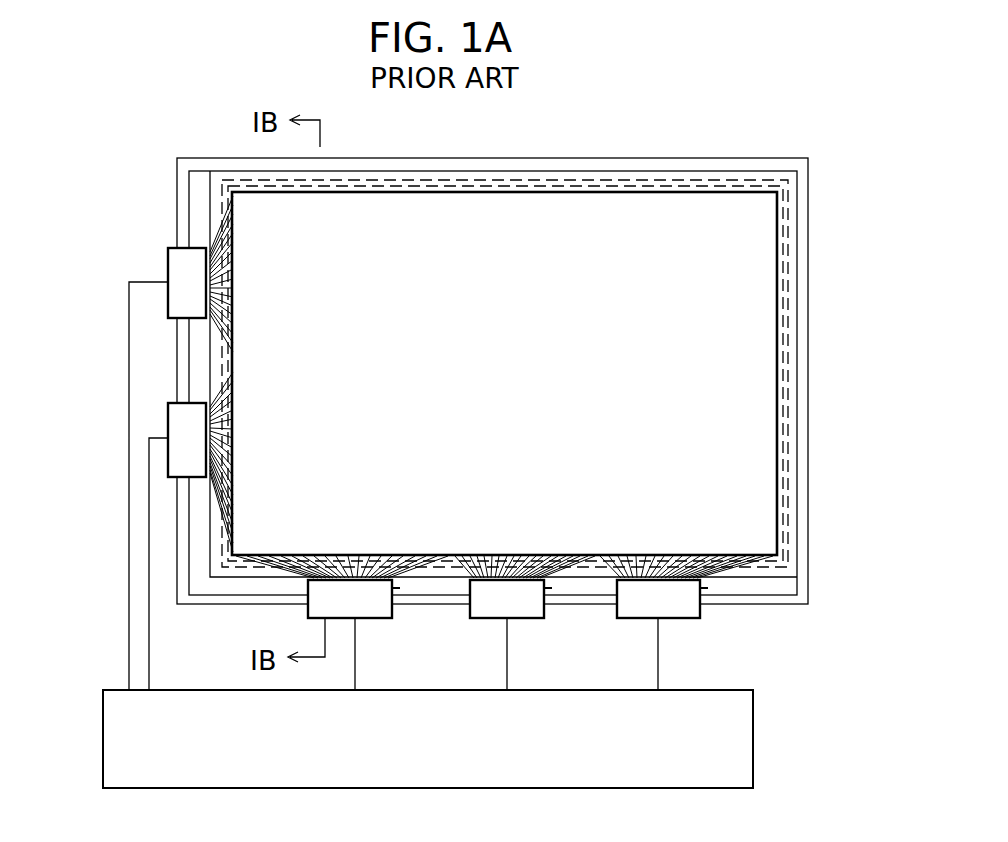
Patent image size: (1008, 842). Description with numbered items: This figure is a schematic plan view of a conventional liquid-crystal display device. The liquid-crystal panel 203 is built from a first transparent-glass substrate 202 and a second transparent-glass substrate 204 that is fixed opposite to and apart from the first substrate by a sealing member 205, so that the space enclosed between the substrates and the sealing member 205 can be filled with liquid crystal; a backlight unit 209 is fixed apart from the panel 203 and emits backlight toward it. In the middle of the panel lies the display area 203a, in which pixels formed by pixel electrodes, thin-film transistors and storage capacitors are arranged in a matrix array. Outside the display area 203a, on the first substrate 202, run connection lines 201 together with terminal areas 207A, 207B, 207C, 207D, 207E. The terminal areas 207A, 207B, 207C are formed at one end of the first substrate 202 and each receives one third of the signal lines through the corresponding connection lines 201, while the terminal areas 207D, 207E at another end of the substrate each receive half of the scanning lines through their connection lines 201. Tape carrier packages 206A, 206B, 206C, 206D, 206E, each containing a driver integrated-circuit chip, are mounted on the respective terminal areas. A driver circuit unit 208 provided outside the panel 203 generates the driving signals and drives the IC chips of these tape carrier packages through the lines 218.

The connection lines 201 is at (233, 278).
The first transparent-glass substrate 202 is at (790, 587).
The liquid-crystal panel 203 is at (635, 169).
The display area 203a is at (545, 327).
The second transparent-glass substrate 204 is at (793, 237).
The sealing member 205 is at (790, 306).
The tape carrier package 206A is at (308, 612).
The tape carrier package 206B is at (477, 614).
The tape carrier package 206C is at (682, 612).
The tape carrier package 206D is at (178, 262).
The tape carrier package 206E is at (175, 423).
The terminal area 207A is at (395, 584).
The terminal area 207B is at (548, 582).
The terminal area 207C is at (705, 587).
The terminal area 207D is at (207, 245).
The terminal area 207E is at (207, 400).
The driver circuit unit 208 is at (753, 740).
The backlight unit 209 is at (806, 414).
The lines 218 is at (148, 578).